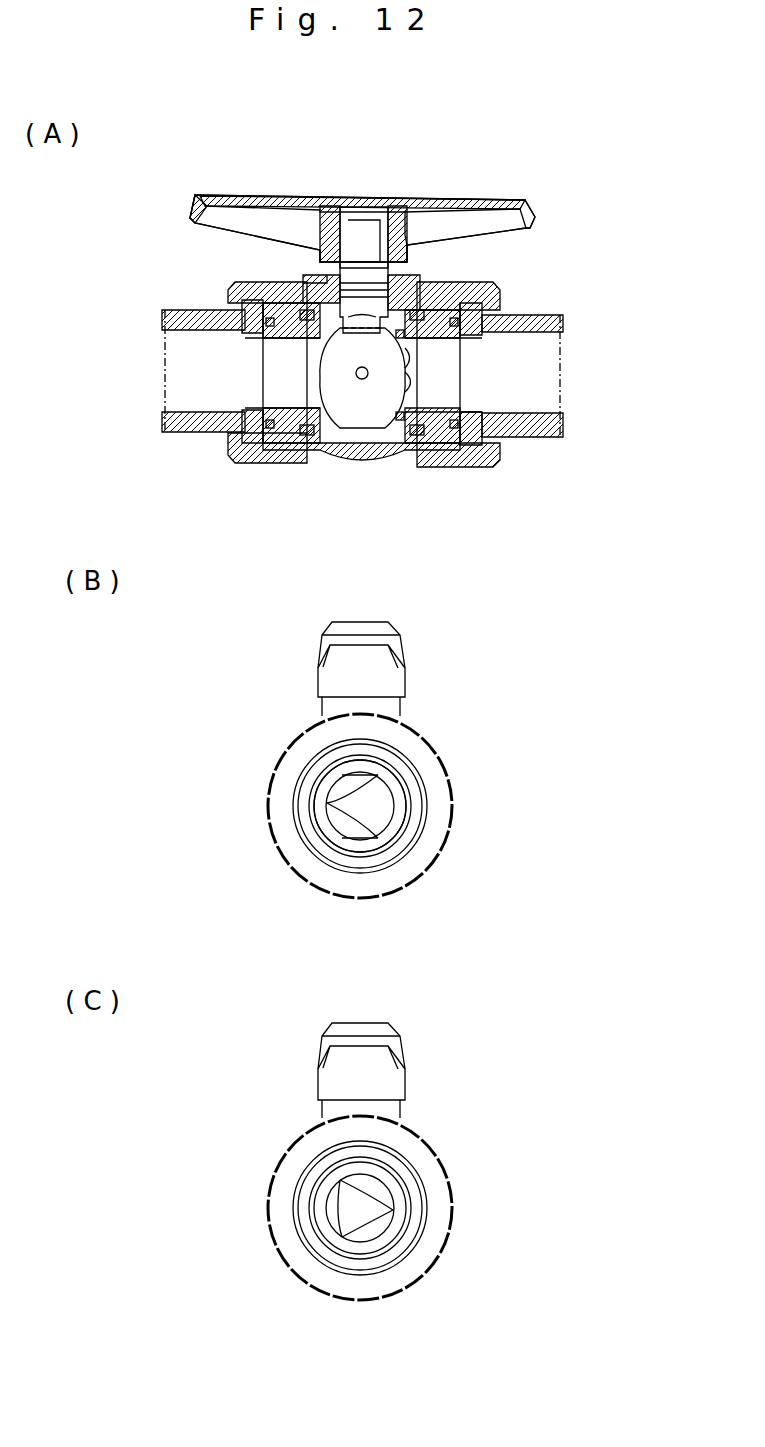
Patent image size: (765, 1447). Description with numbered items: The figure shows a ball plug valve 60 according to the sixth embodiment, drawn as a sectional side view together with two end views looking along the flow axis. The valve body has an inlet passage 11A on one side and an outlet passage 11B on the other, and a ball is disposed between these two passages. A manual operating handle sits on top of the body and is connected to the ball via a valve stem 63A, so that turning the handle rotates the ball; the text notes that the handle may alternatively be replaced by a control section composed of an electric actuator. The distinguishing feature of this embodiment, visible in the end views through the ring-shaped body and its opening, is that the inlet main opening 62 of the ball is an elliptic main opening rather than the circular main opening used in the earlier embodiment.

The ball plug valve 60 is at (182, 200).
The valve stem 63A is at (405, 277).
The inlet passage 11A is at (175, 372).
The outlet passage 11B is at (555, 375).
The inlet main opening 62 is at (325, 785).